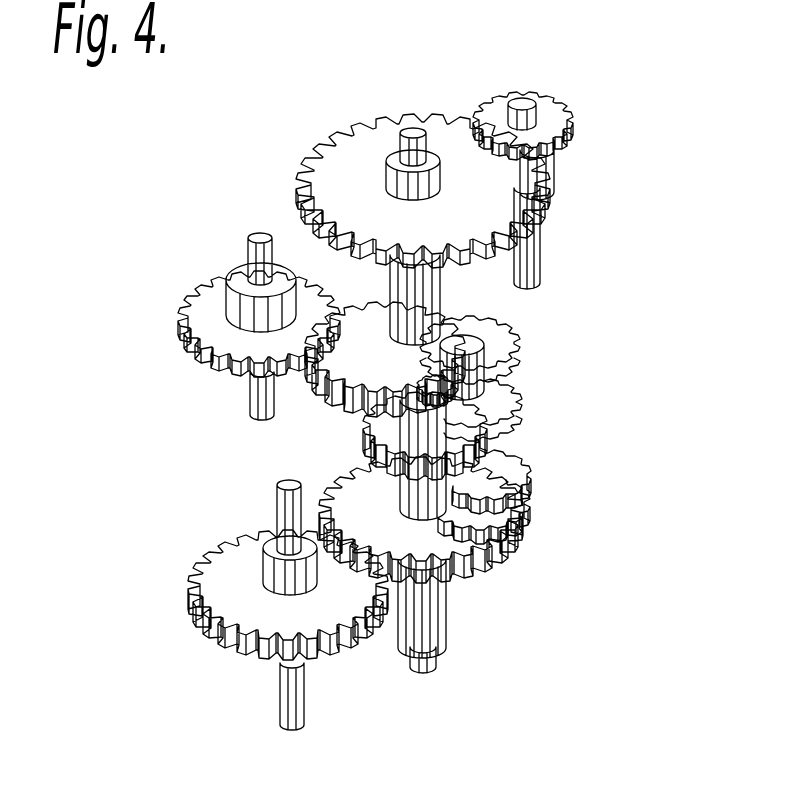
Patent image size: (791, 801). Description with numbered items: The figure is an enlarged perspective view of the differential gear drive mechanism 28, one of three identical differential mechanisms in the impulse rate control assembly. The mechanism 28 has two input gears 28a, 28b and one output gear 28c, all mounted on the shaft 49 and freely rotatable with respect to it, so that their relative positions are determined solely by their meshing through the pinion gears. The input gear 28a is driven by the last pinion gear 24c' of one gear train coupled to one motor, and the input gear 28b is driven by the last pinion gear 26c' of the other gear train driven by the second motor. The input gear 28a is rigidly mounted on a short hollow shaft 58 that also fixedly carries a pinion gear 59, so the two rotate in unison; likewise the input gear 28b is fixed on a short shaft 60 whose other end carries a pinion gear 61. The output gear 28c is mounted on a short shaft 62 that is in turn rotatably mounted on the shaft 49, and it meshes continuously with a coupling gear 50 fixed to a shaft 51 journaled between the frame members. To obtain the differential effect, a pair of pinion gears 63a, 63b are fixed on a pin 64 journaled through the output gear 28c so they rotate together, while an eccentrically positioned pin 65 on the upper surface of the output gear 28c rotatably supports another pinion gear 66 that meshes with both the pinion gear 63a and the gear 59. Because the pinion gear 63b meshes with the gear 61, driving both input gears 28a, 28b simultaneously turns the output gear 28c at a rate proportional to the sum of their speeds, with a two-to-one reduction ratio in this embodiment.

The differential gear drive mechanism 28 is at (628, 392).
The input gear 28a is at (362, 207).
The input gear 28b is at (385, 526).
The output gear 28c is at (368, 377).
The last pinion gear 24c' is at (566, 190).
The last pinion gear 26c' is at (288, 613).
The shaft 49 is at (403, 138).
The coupling gear 50 is at (218, 337).
The shaft 51 is at (250, 387).
The short hollow shaft 58 is at (443, 293).
The pinion gear 59 is at (470, 312).
The short shaft 60 is at (505, 530).
The pinion gear 61 is at (363, 439).
The short shaft 62 is at (397, 360).
The pinion gear 63a is at (443, 385).
The pinion gear 63b is at (505, 482).
The pin 64 is at (495, 418).
The eccentrically positioned pin 65 is at (460, 340).
The pinion gear 66 is at (480, 378).